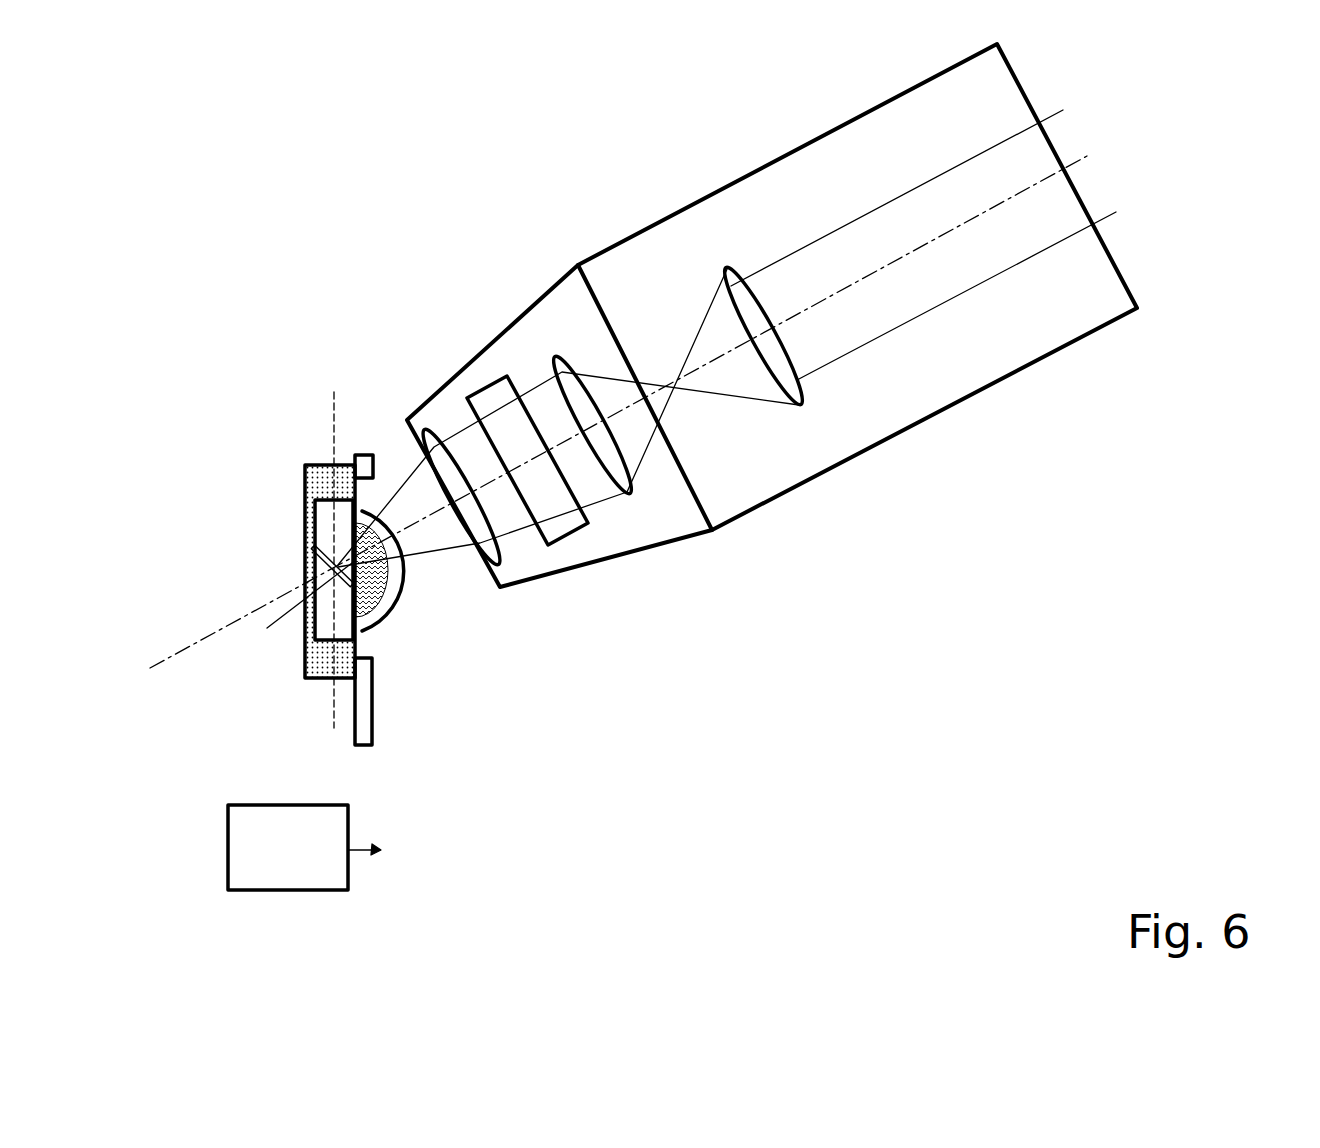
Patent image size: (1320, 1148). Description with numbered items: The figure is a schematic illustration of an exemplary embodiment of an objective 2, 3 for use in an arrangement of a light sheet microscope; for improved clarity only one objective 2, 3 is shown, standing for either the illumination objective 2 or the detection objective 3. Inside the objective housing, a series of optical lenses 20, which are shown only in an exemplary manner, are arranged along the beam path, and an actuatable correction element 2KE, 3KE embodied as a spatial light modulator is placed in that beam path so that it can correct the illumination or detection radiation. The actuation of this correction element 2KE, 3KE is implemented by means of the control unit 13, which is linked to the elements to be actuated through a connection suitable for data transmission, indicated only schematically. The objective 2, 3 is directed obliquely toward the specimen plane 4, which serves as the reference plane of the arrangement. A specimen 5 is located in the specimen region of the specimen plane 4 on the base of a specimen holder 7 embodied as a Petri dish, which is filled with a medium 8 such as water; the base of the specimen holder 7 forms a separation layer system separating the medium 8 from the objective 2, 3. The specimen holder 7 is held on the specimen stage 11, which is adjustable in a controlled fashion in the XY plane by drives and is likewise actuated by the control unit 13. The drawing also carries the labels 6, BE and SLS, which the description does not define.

The illumination objective 2 is at (643, 356).
The detection objective 3 is at (643, 227).
The illumination correction element 2KE is at (504, 403).
The detection correction element 3KE is at (490, 387).
The specimen plane 4 is at (332, 435).
The specimen 5 is at (327, 520).
The light path / beam 6 is at (267, 628).
The specimen holder 7 is at (329, 679).
The medium 8 is at (307, 666).
The specimen stage 11 is at (373, 718).
The control unit 13 is at (308, 868).
The optical lenses 20 is at (799, 405).
The beam deflection element BE is at (312, 550).
The secondary light source lens SLS is at (364, 632).